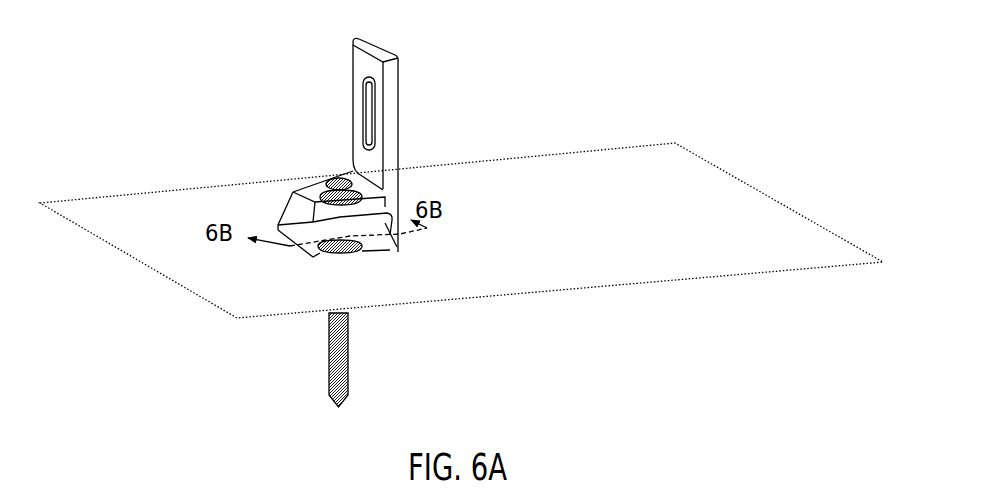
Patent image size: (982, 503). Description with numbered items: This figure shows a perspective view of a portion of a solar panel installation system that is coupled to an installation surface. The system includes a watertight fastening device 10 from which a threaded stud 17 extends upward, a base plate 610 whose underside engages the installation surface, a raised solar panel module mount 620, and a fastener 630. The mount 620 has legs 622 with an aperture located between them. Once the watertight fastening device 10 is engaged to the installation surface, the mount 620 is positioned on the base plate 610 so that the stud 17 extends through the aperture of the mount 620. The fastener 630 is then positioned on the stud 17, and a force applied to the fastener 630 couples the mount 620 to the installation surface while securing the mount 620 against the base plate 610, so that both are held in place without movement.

The watertight fastening device 10 is at (324, 363).
The threaded stud 17 is at (333, 174).
The base plate 610 is at (743, 171).
The raised solar panel module mount 620 is at (402, 101).
The legs 622 is at (316, 259).
The fastener 630 is at (324, 186).